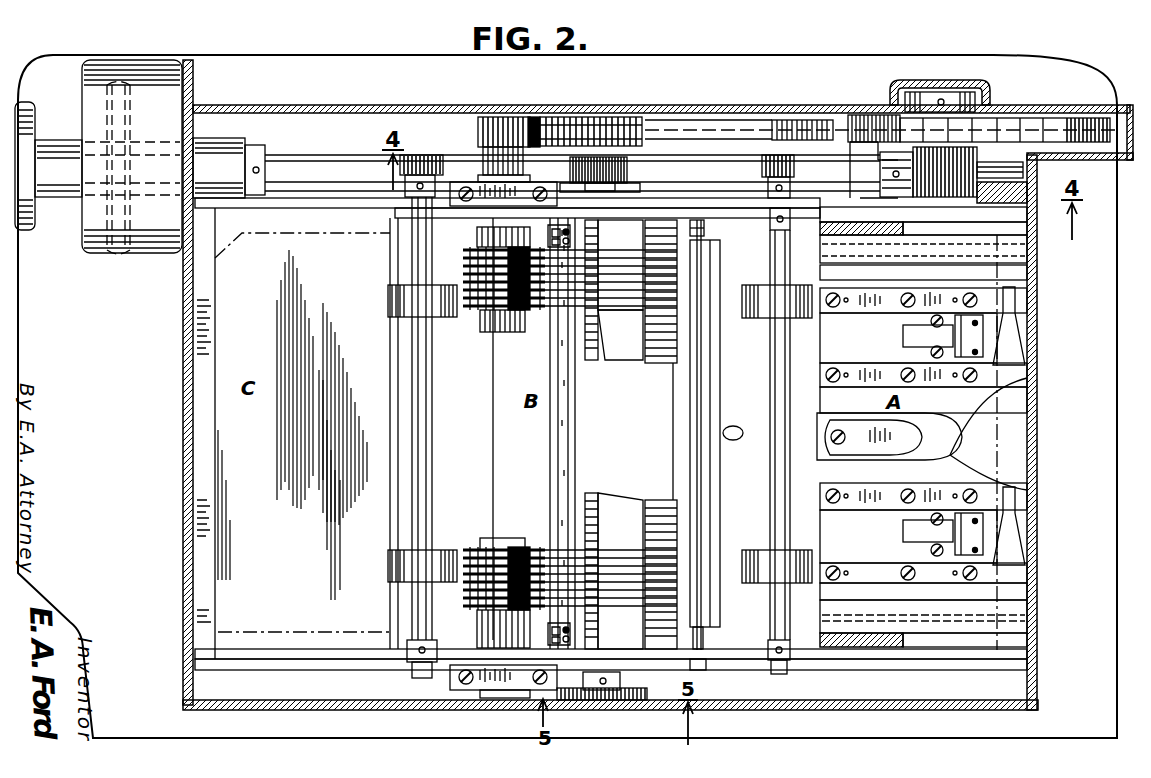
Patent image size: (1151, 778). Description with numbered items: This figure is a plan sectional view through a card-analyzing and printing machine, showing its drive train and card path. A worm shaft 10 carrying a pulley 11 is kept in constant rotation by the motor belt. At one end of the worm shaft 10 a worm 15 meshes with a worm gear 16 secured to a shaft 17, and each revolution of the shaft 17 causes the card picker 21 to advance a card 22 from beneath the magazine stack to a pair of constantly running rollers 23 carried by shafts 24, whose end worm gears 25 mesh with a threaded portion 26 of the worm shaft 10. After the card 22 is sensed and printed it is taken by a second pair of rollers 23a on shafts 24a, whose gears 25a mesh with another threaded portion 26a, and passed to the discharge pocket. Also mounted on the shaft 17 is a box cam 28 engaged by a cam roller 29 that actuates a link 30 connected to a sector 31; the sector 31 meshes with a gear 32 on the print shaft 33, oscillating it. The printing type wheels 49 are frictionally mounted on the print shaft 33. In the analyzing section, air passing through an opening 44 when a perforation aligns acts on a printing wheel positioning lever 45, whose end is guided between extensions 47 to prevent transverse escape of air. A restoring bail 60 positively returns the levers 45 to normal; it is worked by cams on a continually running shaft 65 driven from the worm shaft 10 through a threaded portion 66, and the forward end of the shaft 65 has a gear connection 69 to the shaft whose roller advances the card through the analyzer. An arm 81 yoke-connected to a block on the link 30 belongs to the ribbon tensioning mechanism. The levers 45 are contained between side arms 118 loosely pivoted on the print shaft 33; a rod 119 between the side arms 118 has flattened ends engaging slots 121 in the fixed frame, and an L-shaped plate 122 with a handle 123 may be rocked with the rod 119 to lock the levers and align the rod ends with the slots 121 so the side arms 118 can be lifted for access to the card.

The worm shaft 10 is at (300, 165).
The pulley 11 is at (127, 97).
The worm 15 is at (951, 196).
The worm gear 16 is at (872, 197).
The shaft 17 is at (936, 98).
The card picker 21 is at (963, 339).
The card 22 is at (992, 428).
The rollers 23 is at (790, 312).
The rollers 23a is at (413, 302).
The shafts 24 is at (785, 398).
The shafts 24a is at (424, 449).
The worm gears 25 is at (783, 158).
The gears 25a is at (416, 155).
The threaded portion 26 is at (762, 163).
The threaded portion 26a is at (428, 158).
The box cam 28 is at (1080, 128).
The cam roller 29 is at (866, 118).
The link 30 is at (712, 119).
The sector 31 is at (556, 124).
The gear 32 is at (534, 117).
The print shaft 33 is at (503, 118).
The opening 44 is at (652, 500).
The printing wheel positioning lever 45 is at (637, 285).
The extensions 47 is at (656, 330).
The printing type wheels 49 is at (463, 283).
The restoring bail 60 is at (550, 360).
The shaft 65 is at (622, 196).
The threaded portion 66 is at (620, 158).
The gear connection 69 is at (630, 701).
The arm 81 is at (658, 120).
The side arms 118 is at (742, 218).
The rod 119 is at (706, 233).
The slots 121 is at (696, 664).
The L-shaped plate 122 is at (708, 347).
The handle 123 is at (733, 440).